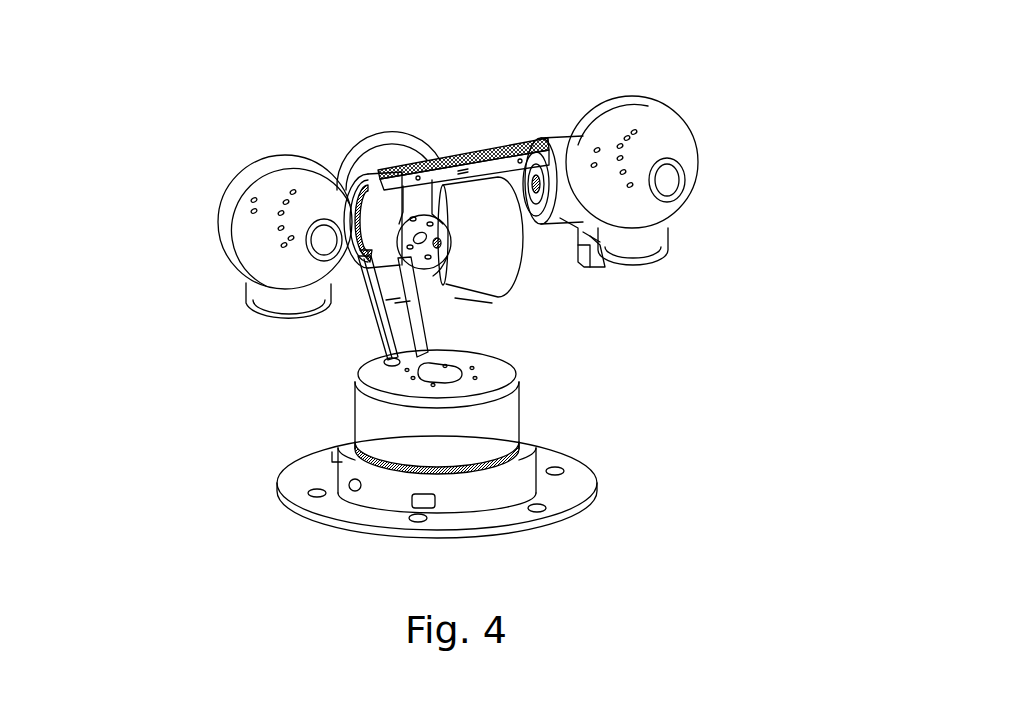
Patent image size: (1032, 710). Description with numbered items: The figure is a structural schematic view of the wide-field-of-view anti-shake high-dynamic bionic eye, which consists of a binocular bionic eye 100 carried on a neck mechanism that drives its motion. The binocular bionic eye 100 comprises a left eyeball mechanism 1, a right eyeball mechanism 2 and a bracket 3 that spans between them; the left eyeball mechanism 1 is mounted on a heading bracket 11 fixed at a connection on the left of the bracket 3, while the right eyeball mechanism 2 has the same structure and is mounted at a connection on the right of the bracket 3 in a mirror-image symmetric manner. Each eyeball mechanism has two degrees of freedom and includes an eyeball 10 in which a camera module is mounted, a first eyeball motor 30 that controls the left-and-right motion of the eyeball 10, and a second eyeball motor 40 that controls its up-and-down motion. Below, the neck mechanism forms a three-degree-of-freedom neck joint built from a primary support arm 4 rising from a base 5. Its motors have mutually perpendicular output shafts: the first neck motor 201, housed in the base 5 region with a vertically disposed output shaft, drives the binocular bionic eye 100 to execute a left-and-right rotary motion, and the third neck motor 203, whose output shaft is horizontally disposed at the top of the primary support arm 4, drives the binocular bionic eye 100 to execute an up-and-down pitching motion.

The left eyeball mechanism 1 is at (683, 201).
The right eyeball mechanism 2 is at (253, 243).
The bracket 3 is at (348, 160).
The primary support arm 4 is at (368, 330).
The base 5 is at (597, 486).
The eyeball 10 is at (336, 246).
The heading bracket 11 is at (632, 268).
The first eyeball motor 30 is at (667, 232).
The second eyeball motor 40 is at (573, 153).
The binocular bionic eye 100 is at (676, 150).
The first neck motor 201 is at (372, 420).
The third neck motor 203 is at (487, 276).